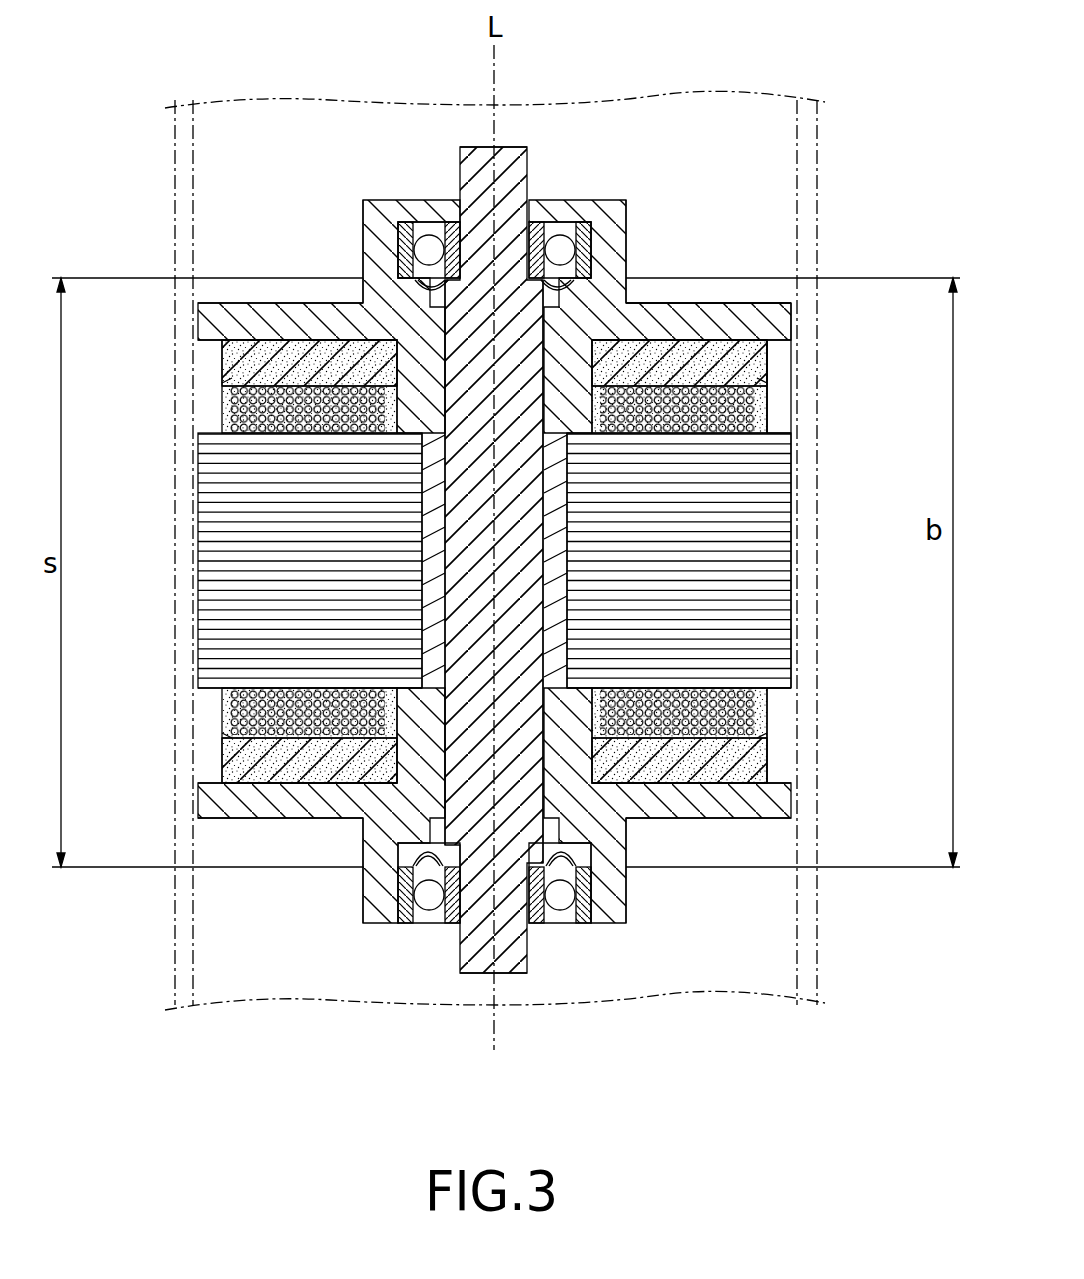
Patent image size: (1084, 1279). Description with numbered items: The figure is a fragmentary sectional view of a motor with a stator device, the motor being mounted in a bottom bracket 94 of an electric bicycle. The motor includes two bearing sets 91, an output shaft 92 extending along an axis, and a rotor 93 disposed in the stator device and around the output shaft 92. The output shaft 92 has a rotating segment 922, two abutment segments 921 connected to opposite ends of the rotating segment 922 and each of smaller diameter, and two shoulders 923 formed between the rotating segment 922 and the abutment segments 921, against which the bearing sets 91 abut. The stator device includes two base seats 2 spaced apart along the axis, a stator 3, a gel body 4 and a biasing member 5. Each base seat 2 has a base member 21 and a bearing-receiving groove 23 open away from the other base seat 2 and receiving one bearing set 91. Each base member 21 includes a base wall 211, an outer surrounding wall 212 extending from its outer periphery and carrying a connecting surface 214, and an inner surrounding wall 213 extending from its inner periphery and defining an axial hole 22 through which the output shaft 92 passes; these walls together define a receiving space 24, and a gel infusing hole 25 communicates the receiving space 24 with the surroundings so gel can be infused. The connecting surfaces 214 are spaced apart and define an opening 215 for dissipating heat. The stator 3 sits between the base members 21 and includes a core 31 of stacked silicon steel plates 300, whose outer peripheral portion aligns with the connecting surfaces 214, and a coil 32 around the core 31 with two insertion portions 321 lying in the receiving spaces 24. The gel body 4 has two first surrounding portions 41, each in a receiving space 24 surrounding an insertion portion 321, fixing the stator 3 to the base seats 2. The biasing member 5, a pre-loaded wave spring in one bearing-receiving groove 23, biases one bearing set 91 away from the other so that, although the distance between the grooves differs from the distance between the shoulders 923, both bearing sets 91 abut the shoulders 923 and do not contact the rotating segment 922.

The base seat 2 is at (555, 548).
The stator 3 is at (481, 558).
The gel body 4 is at (160, 272).
The biasing member 5 is at (420, 848).
The base member 21 is at (628, 243).
The axial hole 22 is at (547, 312).
The bearing-receiving groove 23 is at (570, 207).
The receiving space 24 is at (765, 398).
The gel infusing hole 25 is at (222, 383).
The core 31 is at (432, 560).
The coil 32 is at (495, 558).
The first surrounding portion 41 is at (222, 350).
The bearing set 91 is at (408, 232).
The output shaft 92 is at (667, 578).
The rotor 93 is at (432, 682).
The bottom bracket 94 is at (817, 953).
The base wall 211 is at (742, 301).
The outer surrounding wall 212 is at (783, 377).
The inner surrounding wall 213 is at (577, 353).
The connecting surface 214 is at (778, 452).
The opening 215 is at (790, 545).
The silicon steel plate 300 is at (207, 527).
The insertion portion 321 is at (222, 405).
The abutment segment 921 is at (524, 150).
The rotating segment 922 is at (527, 556).
The shoulder 923 is at (412, 278).